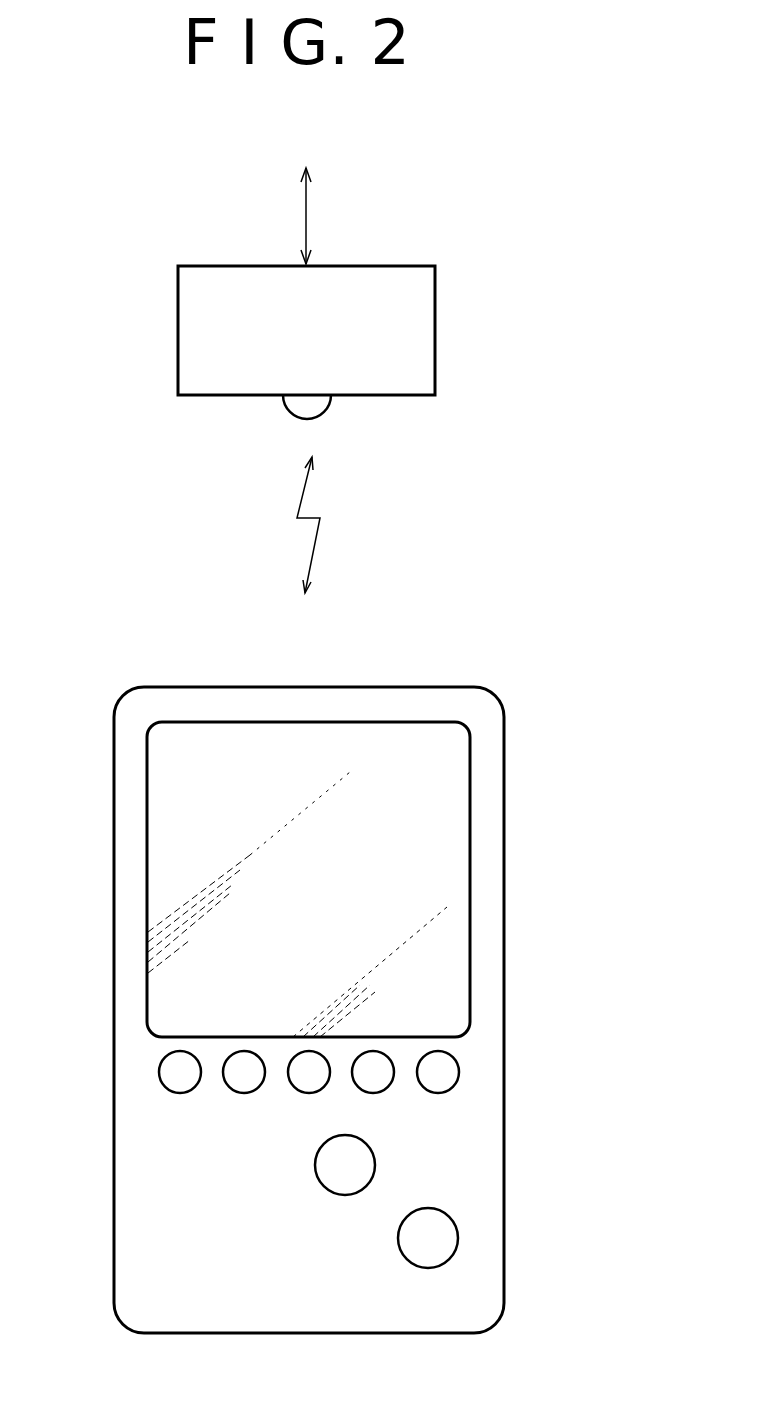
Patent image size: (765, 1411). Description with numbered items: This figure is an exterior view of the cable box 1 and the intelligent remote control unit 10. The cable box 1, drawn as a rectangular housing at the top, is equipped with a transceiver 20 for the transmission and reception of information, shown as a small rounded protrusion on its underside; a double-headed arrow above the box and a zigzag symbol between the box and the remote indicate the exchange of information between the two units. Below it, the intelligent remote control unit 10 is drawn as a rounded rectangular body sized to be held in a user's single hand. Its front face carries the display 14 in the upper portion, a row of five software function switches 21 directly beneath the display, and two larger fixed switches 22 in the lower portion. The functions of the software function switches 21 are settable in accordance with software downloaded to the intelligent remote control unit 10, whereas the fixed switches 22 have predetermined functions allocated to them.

The cable box 1 is at (435, 305).
The transceiver 20 is at (293, 415).
The intelligent remote control unit 10 is at (523, 756).
The display 14 is at (423, 752).
The software function switches 21 is at (94, 1043).
The fixed switches 22 is at (532, 1140).